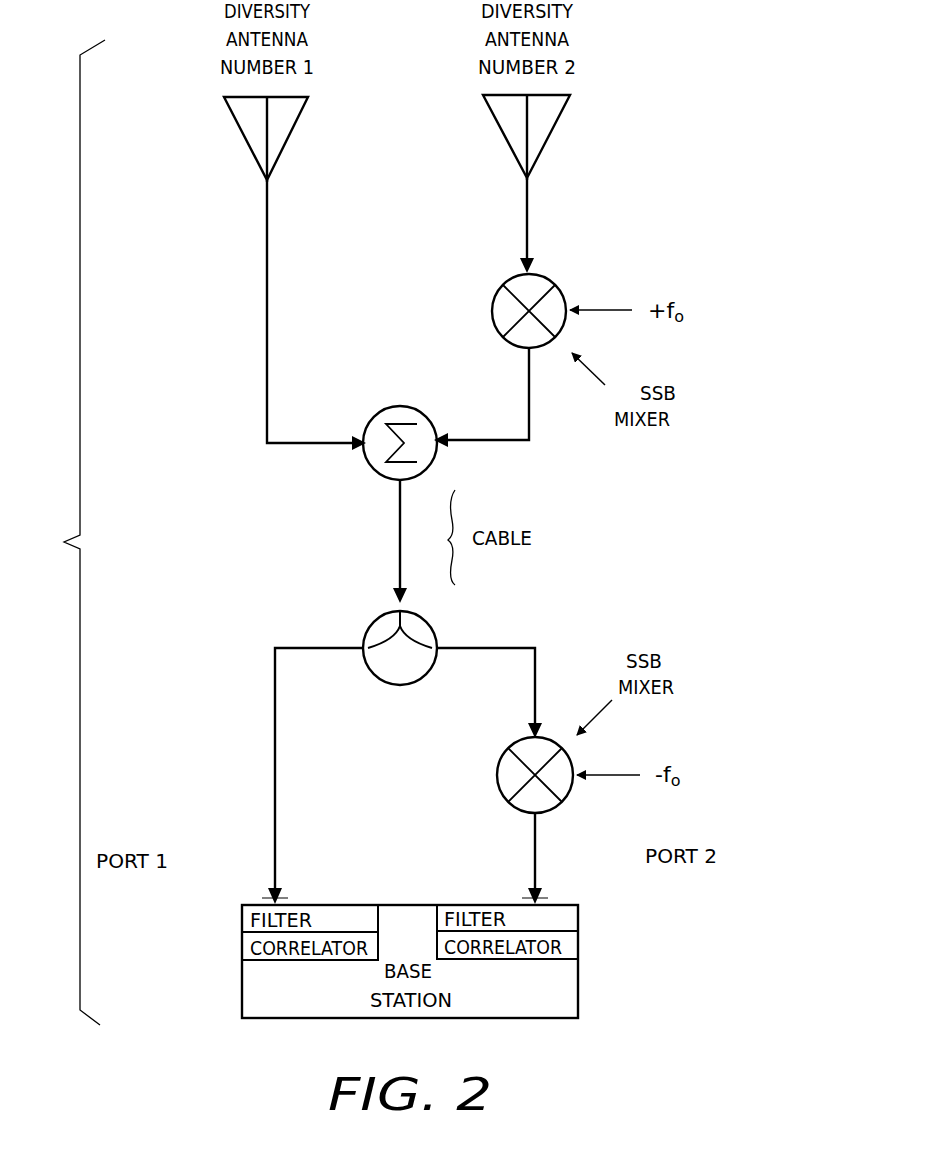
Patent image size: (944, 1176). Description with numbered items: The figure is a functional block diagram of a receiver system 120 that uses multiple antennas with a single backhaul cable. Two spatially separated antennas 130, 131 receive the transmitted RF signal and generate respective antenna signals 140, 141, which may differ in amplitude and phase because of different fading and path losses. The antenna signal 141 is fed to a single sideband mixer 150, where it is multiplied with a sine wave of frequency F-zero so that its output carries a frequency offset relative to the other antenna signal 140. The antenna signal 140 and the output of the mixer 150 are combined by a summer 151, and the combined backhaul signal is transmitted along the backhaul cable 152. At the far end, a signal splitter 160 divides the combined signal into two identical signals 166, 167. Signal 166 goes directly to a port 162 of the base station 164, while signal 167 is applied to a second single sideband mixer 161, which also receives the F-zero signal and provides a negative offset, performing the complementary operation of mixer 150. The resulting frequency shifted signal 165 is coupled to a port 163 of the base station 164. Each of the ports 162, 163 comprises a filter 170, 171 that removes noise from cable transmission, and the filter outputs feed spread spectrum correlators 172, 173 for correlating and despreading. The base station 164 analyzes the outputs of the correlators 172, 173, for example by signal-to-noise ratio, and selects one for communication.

The receiver system 120 is at (58, 532).
The antenna 130 is at (245, 143).
The antenna 131 is at (545, 143).
The antenna signal 140 is at (267, 268).
The antenna signal 141 is at (529, 219).
The mixer 150 is at (491, 311).
The summer 151 is at (372, 473).
The backhaul cable 152 is at (400, 556).
The signal splitter 160 is at (386, 680).
The mixer 161 is at (502, 791).
The port 162 is at (252, 884).
The port 163 is at (566, 882).
The base station 164 is at (242, 992).
The frequency shifted signal 165 is at (535, 852).
The signal 166 is at (297, 647).
The signal 167 is at (500, 647).
The filter 170 is at (242, 920).
The filter 171 is at (578, 918).
The spread spectrum correlator 172 is at (242, 948).
The spread spectrum correlator 173 is at (578, 948).